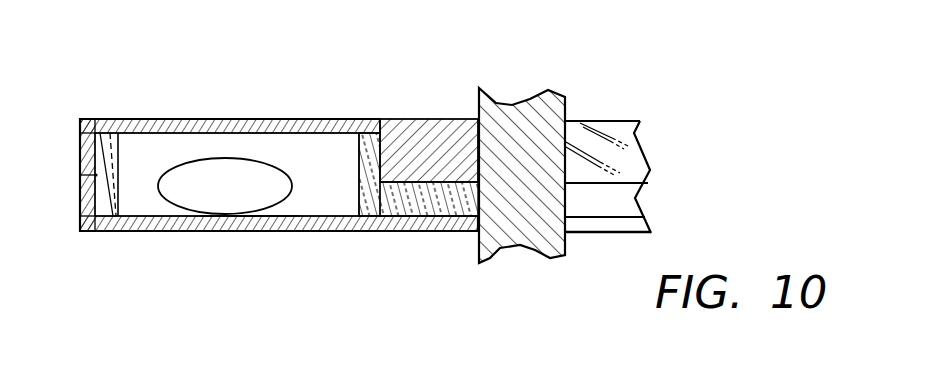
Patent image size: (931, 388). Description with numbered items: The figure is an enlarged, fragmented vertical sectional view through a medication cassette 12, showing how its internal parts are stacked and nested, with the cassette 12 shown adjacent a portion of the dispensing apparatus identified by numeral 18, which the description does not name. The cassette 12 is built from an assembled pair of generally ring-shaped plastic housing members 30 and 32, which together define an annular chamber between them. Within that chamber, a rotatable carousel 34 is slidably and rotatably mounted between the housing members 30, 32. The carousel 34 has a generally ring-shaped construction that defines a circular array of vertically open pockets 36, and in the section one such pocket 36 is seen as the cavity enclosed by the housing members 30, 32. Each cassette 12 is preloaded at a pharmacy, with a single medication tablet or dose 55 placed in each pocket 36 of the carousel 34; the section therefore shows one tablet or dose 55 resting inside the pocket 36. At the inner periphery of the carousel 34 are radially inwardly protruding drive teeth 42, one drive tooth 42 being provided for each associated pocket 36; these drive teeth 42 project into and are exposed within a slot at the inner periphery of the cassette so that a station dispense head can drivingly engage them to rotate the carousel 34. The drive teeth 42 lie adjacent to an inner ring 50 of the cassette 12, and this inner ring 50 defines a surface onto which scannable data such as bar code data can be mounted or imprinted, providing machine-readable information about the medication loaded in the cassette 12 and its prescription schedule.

The cassette 12 is at (87, 251).
The connector block 18 is at (557, 113).
The housing member 30 is at (228, 119).
The housing member 32 is at (290, 232).
The carousel 34 is at (378, 212).
The pocket 36 is at (137, 146).
The drive tooth 42 is at (447, 212).
The inner ring 50 is at (420, 121).
The medication tablet or dose 55 is at (227, 197).